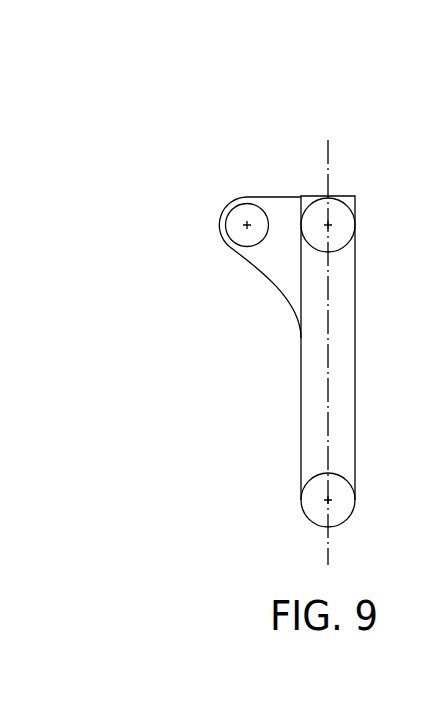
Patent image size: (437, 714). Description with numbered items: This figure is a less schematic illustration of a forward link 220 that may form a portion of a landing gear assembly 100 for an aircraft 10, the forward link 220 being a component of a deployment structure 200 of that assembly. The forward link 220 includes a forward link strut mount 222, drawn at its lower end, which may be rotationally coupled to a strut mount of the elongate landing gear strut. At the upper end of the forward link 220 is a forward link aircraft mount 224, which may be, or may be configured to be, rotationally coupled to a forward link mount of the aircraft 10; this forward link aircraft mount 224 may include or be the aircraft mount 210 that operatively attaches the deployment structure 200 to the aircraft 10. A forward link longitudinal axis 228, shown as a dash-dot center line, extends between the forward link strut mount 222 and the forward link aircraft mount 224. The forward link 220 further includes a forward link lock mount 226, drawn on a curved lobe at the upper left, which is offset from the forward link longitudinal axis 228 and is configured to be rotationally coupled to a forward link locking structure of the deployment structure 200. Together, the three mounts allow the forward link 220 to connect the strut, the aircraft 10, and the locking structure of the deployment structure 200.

The aircraft 10 is at (64, 87).
The apparatus 100 is at (106, 145).
The deployment structure 200 is at (144, 200).
The aircraft mount 210 is at (369, 246).
The forward link 220 is at (299, 371).
The forward link strut mount 222 is at (312, 503).
The forward link aircraft mount 224 is at (346, 225).
The forward link lock mount 226 is at (243, 211).
The forward link longitudinal axis 228 is at (332, 172).